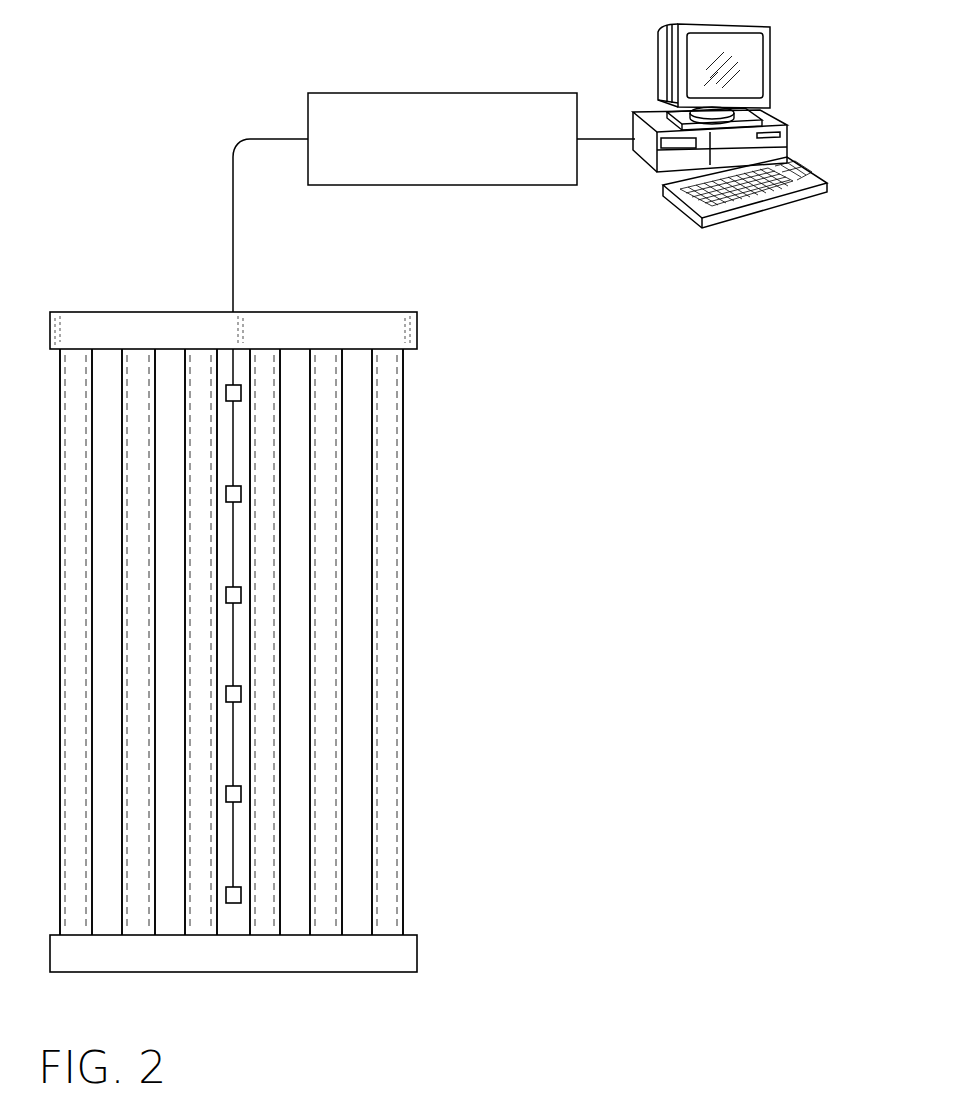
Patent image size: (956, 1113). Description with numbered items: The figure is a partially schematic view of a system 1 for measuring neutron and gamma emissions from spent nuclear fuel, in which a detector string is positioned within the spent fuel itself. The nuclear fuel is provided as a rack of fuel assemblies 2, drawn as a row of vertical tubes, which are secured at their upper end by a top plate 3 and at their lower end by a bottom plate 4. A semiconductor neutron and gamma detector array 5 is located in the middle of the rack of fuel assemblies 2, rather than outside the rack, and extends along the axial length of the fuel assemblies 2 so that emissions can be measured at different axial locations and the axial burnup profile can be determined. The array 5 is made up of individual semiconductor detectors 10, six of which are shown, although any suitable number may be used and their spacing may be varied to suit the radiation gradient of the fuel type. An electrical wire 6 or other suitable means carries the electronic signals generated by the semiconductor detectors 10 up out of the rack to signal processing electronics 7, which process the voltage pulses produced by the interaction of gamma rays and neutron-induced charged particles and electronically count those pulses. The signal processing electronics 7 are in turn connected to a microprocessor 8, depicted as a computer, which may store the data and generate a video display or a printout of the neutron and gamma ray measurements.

The system 1 is at (138, 255).
The fuel assembly 2 is at (403, 492).
The top plate 3 is at (417, 332).
The bottom plate 4 is at (417, 958).
The detector array 5 is at (252, 591).
The electrical wire 6 is at (233, 272).
The signal processing electronics 7 is at (364, 93).
The microprocessor 8 is at (758, 72).
The semiconductor detector 10 is at (226, 903).